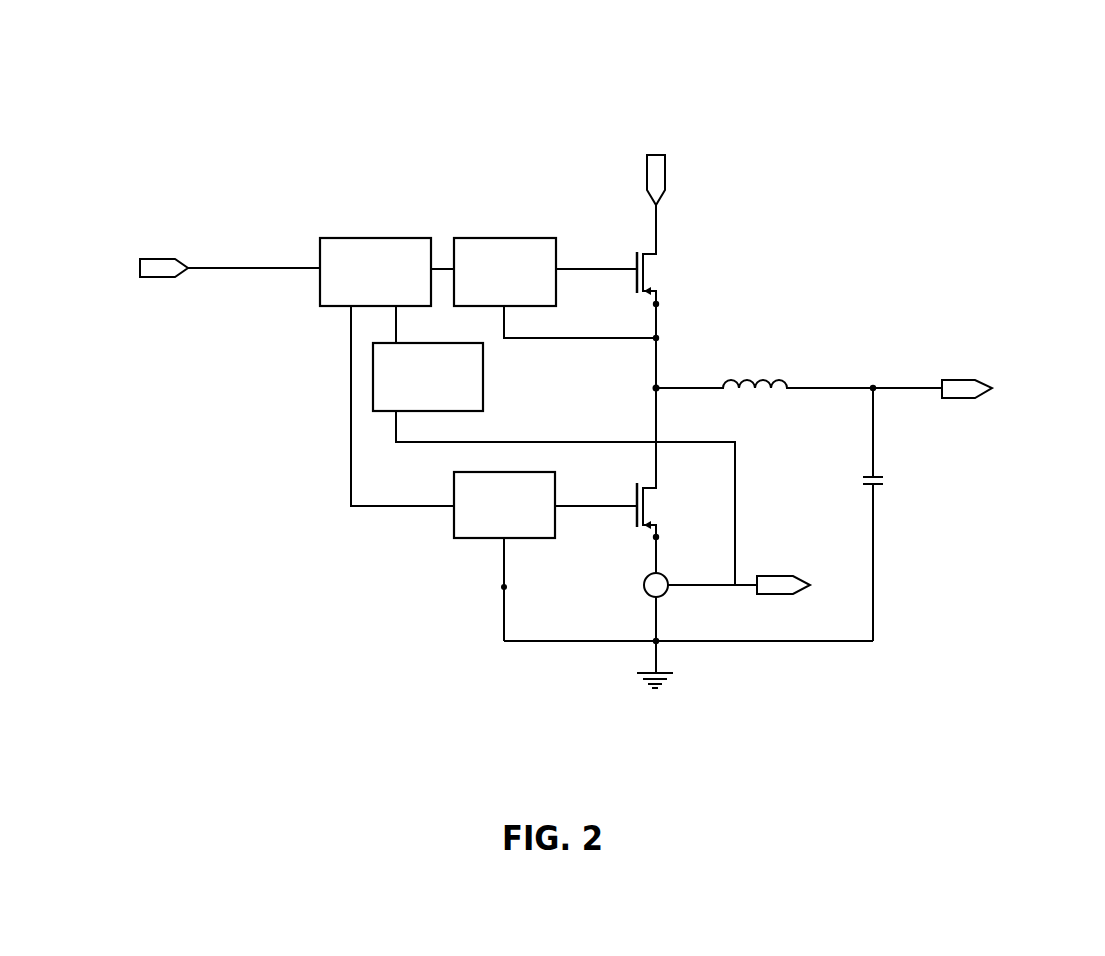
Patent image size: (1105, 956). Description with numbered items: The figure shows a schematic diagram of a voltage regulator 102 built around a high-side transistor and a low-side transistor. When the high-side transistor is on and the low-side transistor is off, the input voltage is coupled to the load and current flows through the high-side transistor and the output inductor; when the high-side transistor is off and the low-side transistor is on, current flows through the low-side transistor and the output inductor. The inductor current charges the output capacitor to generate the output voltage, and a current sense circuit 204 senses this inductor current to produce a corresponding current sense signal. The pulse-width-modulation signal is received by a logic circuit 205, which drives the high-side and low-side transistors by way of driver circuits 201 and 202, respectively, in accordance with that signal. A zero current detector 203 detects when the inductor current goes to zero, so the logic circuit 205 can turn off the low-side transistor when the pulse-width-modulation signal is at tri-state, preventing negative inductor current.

The voltage regulator 102 is at (164, 117).
The driver circuit 201 is at (492, 237).
The driver circuit 202 is at (463, 539).
The zero current detector 203 is at (483, 380).
The current sense circuit 204 is at (663, 595).
The PWM logic circuit 205 is at (373, 237).